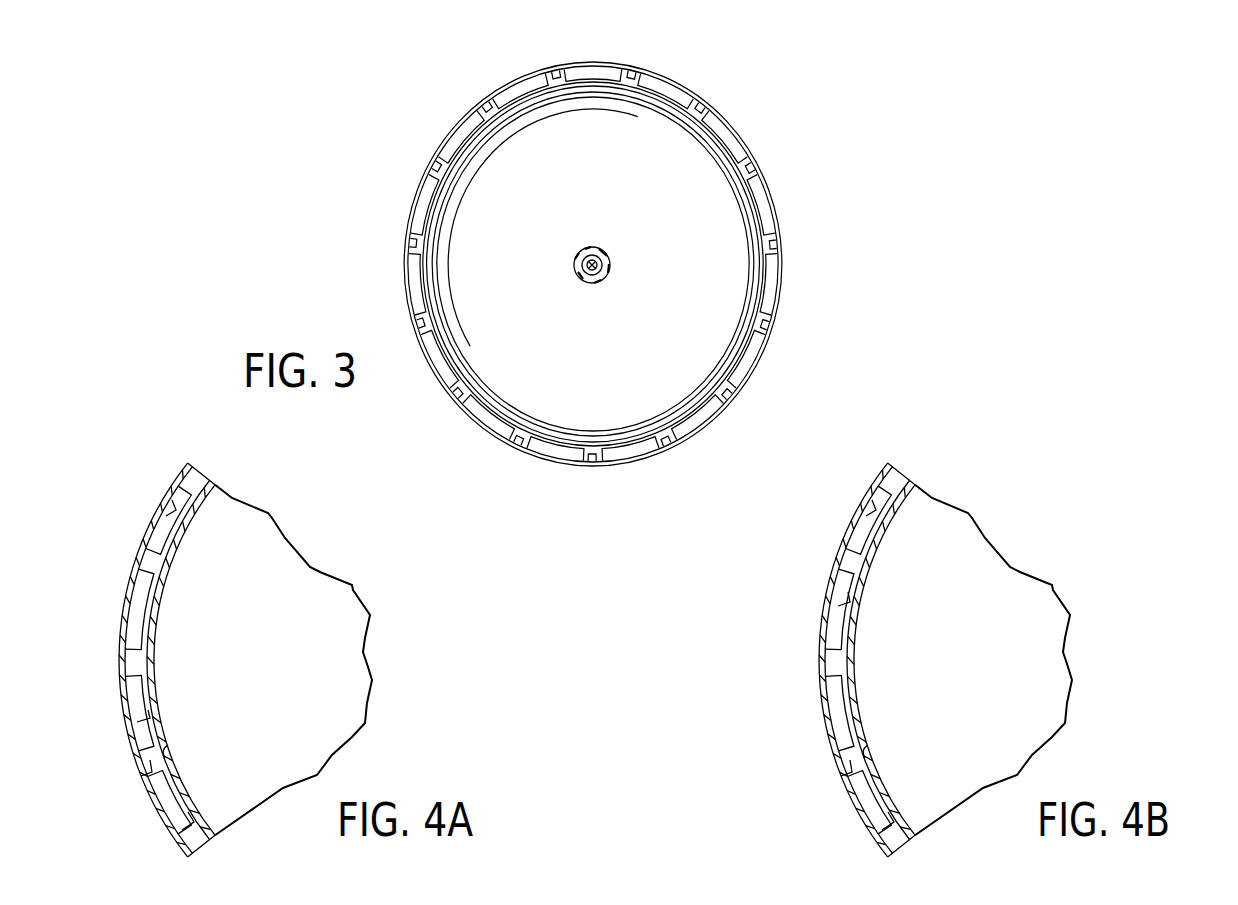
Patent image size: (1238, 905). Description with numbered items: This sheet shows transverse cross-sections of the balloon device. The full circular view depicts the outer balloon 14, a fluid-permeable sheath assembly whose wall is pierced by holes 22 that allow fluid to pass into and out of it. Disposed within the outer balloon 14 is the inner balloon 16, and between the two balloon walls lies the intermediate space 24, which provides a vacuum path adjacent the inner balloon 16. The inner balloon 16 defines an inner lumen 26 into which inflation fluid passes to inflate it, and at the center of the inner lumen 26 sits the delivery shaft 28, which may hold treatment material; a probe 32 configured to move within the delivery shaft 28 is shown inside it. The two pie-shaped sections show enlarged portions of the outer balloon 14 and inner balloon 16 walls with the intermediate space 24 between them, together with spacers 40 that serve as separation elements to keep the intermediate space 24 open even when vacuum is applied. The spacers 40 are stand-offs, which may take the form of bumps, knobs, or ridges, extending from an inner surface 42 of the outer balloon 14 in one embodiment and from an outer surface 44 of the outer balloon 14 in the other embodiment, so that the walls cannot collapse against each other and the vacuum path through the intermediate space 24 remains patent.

In FIG. 3, the outer balloon 14 is at (779, 243).
In FIG. 4A, the outer balloon 14 is at (135, 566).
In FIG. 4B, the outer balloon 14 is at (846, 660).
In FIG. 3, the inner balloon 16 is at (702, 118).
In FIG. 4A, the inner balloon 16 is at (166, 573).
In FIG. 4B, the inner balloon 16 is at (884, 660).
In FIG. 3, the holes 22 is at (462, 122).
In FIG. 4A, the holes 22 is at (141, 776).
In FIG. 4B, the holes 22 is at (823, 787).
In FIG. 3, the intermediate space 24 is at (752, 170).
In FIG. 4A, the intermediate space 24 is at (137, 631).
In FIG. 4B, the intermediate space 24 is at (830, 660).
In FIG. 3, the inner lumen 26 is at (603, 356).
In FIG. 4A, the inner lumen 26 is at (315, 684).
In FIG. 4B, the inner lumen 26 is at (993, 660).
In FIG. 3, the delivery shaft 28 is at (593, 247).
In FIG. 3, the probe 32 is at (611, 265).
In FIG. 3, the spacers 40 is at (413, 228).
In FIG. 4A, the spacers 40 is at (137, 722).
In FIG. 4B, the spacers 40 is at (836, 729).
In FIG. 4A, the inner surface 42 is at (166, 516).
In FIG. 4B, the inner surface 42 is at (844, 492).
In FIG. 4A, the outer surface 44 is at (165, 758).
In FIG. 4B, the outer surface 44 is at (902, 739).